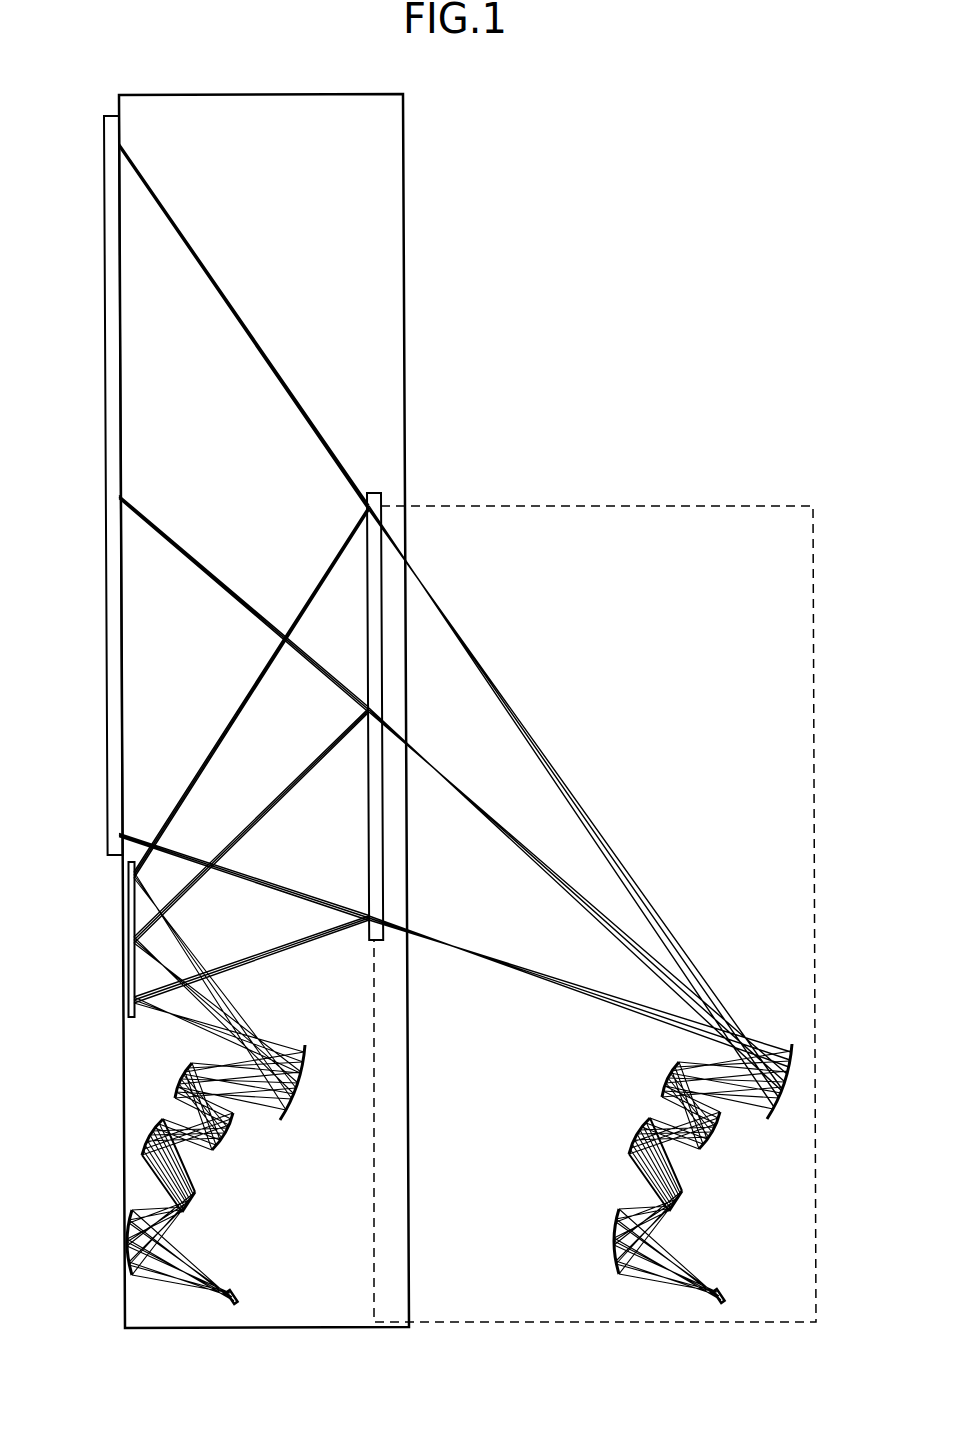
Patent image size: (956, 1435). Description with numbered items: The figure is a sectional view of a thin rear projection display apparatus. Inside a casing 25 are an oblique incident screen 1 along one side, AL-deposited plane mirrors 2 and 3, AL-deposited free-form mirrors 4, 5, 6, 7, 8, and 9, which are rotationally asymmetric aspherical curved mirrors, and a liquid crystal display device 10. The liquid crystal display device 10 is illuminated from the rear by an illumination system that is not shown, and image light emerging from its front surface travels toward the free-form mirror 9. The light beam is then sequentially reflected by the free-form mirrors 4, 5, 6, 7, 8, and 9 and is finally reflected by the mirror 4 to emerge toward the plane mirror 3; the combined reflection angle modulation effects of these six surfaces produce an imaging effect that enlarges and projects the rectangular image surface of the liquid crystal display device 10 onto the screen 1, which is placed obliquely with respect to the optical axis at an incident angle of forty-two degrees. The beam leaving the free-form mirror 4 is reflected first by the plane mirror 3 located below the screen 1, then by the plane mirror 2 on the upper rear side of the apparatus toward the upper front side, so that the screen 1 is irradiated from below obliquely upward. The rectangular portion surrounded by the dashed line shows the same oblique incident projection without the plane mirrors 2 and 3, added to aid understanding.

The oblique incident screen 1 is at (105, 398).
The plane mirror 2 is at (383, 680).
The plane mirror 3 is at (128, 930).
The free-form mirror 4 is at (297, 1091).
The free-form mirror 5 is at (189, 1079).
The free-form mirror 6 is at (226, 1135).
The free-form mirror 7 is at (159, 1132).
The free-form mirror 8 is at (196, 1216).
The free-form mirror 9 is at (126, 1266).
The liquid crystal display device 10 is at (238, 1297).
The casing 25 is at (404, 318).